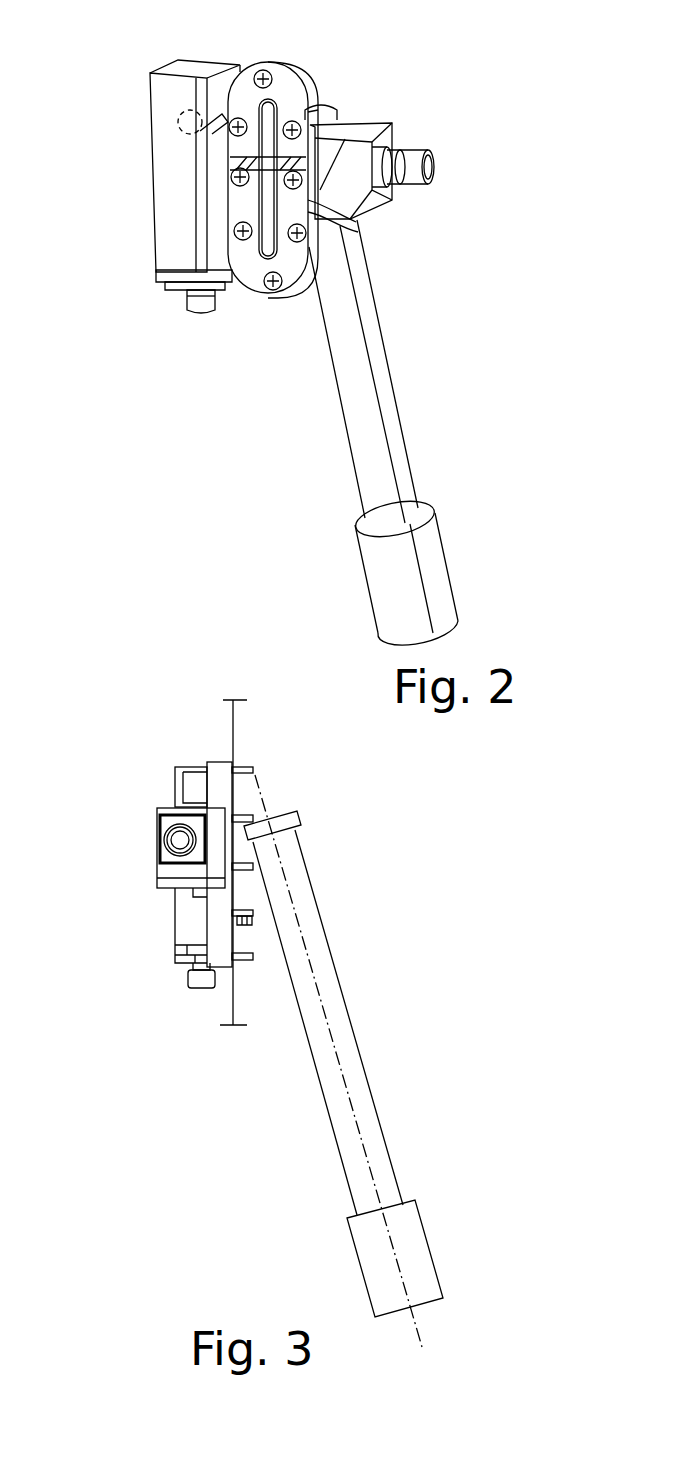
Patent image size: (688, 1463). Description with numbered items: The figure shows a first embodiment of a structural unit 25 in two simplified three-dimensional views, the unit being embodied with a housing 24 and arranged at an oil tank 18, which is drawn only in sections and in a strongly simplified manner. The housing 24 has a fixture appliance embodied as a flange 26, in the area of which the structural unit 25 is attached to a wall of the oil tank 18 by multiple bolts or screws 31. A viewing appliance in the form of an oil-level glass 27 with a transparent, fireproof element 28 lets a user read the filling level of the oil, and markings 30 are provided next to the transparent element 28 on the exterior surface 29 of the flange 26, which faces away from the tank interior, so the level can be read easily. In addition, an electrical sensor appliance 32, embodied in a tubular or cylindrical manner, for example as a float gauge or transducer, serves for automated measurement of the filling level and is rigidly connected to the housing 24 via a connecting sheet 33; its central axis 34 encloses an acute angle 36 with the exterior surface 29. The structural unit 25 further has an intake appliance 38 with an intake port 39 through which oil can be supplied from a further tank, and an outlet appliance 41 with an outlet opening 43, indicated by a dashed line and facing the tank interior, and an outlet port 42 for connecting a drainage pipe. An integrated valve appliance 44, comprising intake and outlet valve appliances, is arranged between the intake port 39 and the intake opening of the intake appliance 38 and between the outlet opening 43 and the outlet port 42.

In FIG. 3, the oil tank 18 is at (232, 722).
In FIG. 2, the housing 24 is at (258, 62).
In FIG. 3, the housing 24 is at (197, 765).
In FIG. 2, the structural unit 25 is at (110, 76).
In FIG. 3, the structural unit 25 is at (154, 683).
In FIG. 2, the flange 26 is at (307, 92).
In FIG. 3, the flange 26 is at (222, 768).
In FIG. 2, the oil-level glass 27 is at (268, 264).
In FIG. 2, the transparent element 28 is at (257, 203).
In FIG. 2, the exterior surface 29 is at (291, 268).
In FIG. 3, the exterior surface 29 is at (203, 928).
In FIG. 2, the markings 30 is at (312, 218).
In FIG. 2, the screws 31 is at (236, 134).
In FIG. 3, the screws 31 is at (250, 813).
In FIG. 2, the sensor appliance 32 is at (410, 450).
In FIG. 3, the sensor appliance 32 is at (373, 1089).
In FIG. 3, the connecting sheet 33 is at (258, 880).
In FIG. 3, the central axis 34 is at (395, 1260).
In FIG. 3, the acute angle 36 is at (299, 927).
In FIG. 2, the intake appliance 38 is at (430, 153).
In FIG. 3, the intake appliance 38 is at (161, 840).
In FIG. 2, the intake port 39 is at (398, 126).
In FIG. 3, the intake port 39 is at (172, 848).
In FIG. 2, the outlet appliance 41 is at (187, 123).
In FIG. 3, the outlet appliance 41 is at (182, 982).
In FIG. 2, the outlet port 42 is at (203, 305).
In FIG. 3, the outlet port 42 is at (208, 982).
In FIG. 2, the outlet opening 43 is at (225, 117).
In FIG. 2, the integrated valve appliance 44 is at (160, 87).
In FIG. 3, the integrated valve appliance 44 is at (193, 787).